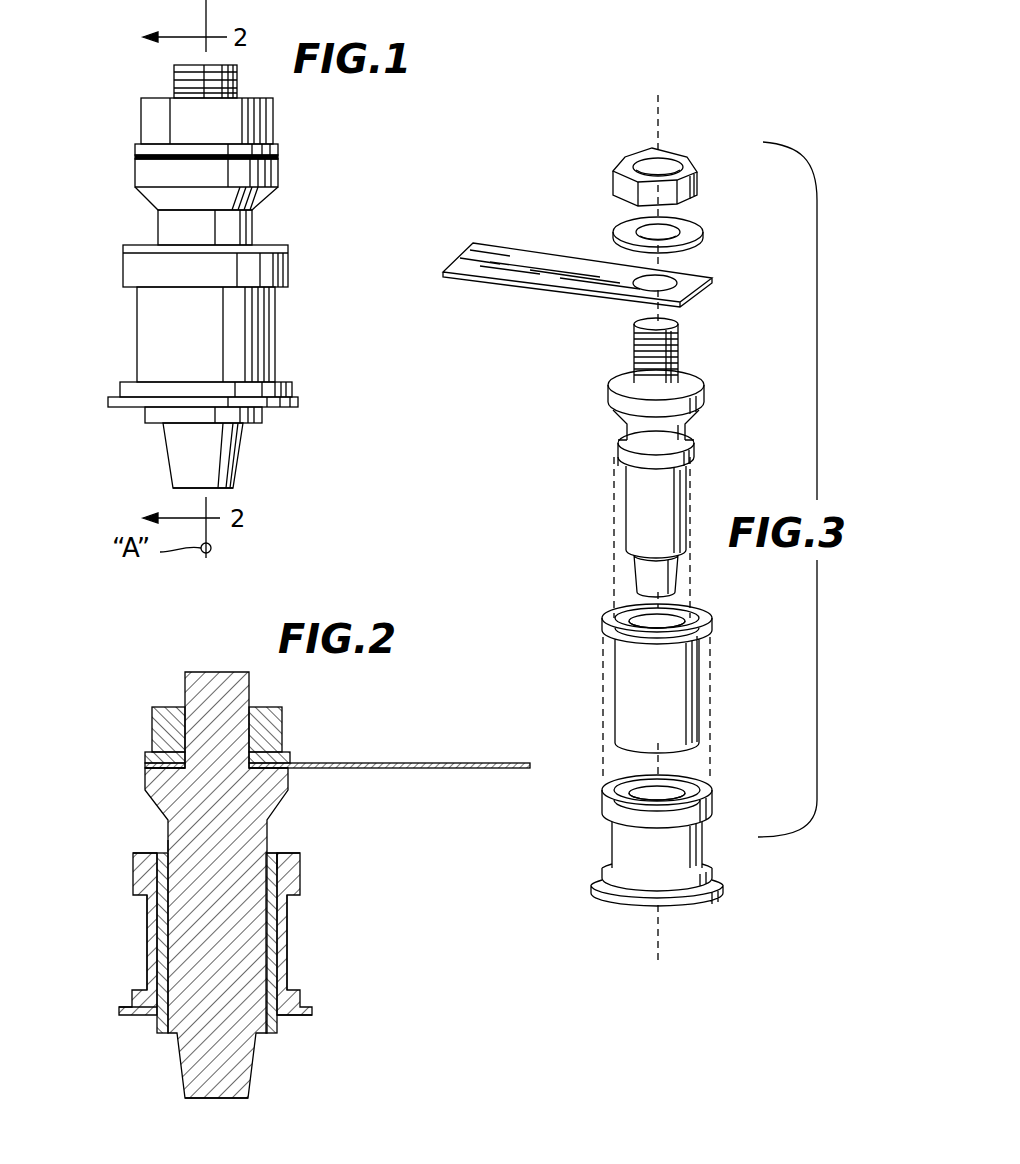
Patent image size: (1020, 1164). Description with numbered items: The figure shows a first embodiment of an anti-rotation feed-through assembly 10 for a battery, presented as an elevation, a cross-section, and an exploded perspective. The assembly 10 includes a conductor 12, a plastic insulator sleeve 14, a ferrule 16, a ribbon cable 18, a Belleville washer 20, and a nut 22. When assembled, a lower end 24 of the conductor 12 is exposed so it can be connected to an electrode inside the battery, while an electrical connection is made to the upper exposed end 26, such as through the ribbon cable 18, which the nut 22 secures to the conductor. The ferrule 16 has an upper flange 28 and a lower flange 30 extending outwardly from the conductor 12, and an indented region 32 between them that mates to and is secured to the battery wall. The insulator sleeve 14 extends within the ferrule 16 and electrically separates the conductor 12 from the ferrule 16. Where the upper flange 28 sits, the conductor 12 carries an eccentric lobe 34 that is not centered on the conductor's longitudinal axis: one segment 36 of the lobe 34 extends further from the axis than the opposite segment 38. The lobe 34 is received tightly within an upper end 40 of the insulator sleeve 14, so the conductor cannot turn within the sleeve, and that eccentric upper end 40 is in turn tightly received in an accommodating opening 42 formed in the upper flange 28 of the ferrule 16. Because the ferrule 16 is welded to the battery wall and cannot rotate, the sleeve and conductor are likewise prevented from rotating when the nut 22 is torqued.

In FIG. 1, the anti-rotation feed-through assembly 10 is at (312, 112).
In FIG. 2, the anti-rotation feed-through assembly 10 is at (348, 893).
In FIG. 1, the conductor 12 is at (237, 442).
In FIG. 2, the conductor 12 is at (180, 1062).
In FIG. 3, the conductor 12 is at (645, 459).
In FIG. 1, the plastic insulator sleeve 14 is at (286, 247).
In FIG. 2, the plastic insulator sleeve 14 is at (152, 1032).
In FIG. 3, the plastic insulator sleeve 14 is at (654, 650).
In FIG. 1, the ferrule 16 is at (219, 364).
In FIG. 2, the ferrule 16 is at (310, 1012).
In FIG. 3, the ferrule 16 is at (662, 827).
In FIG. 1, the ribbon cable 18 is at (135, 158).
In FIG. 2, the ribbon cable 18 is at (388, 764).
In FIG. 3, the ribbon cable 18 is at (485, 248).
In FIG. 1, the Belleville washer 20 is at (279, 148).
In FIG. 2, the Belleville washer 20 is at (290, 760).
In FIG. 3, the Belleville washer 20 is at (610, 232).
In FIG. 1, the nut 22 is at (147, 113).
In FIG. 2, the nut 22 is at (170, 707).
In FIG. 3, the nut 22 is at (612, 178).
In FIG. 1, the lower end of the conductor 24 is at (222, 492).
In FIG. 2, the lower end of the conductor 24 is at (228, 1099).
In FIG. 3, the lower end of the conductor 24 is at (690, 600).
In FIG. 1, the upper exposed end of the conductor 26 is at (279, 172).
In FIG. 2, the upper exposed end of the conductor 26 is at (146, 782).
In FIG. 3, the upper exposed end of the conductor 26 is at (610, 394).
In FIG. 1, the upper flange 28 is at (130, 267).
In FIG. 2, the upper flange 28 is at (134, 880).
In FIG. 3, the upper flange 28 is at (603, 805).
In FIG. 1, the lower flange 30 is at (296, 400).
In FIG. 2, the lower flange 30 is at (122, 1010).
In FIG. 3, the lower flange 30 is at (720, 883).
In FIG. 1, the indented region 32 is at (150, 335).
In FIG. 2, the indented region 32 is at (286, 948).
In FIG. 3, the indented region 32 is at (612, 843).
In FIG. 2, the eccentric lobe 34 is at (270, 855).
In FIG. 3, the eccentric lobe 34 is at (612, 438).
In FIG. 2, the segment of the lobe 36 is at (274, 866).
In FIG. 3, the segment of the lobe 36 is at (618, 455).
In FIG. 2, the opposite segment 38 is at (166, 852).
In FIG. 3, the opposite segment 38 is at (692, 445).
In FIG. 3, the upper end of the insulator sleeve 40 is at (625, 600).
In FIG. 3, the accommodating opening 42 is at (622, 775).